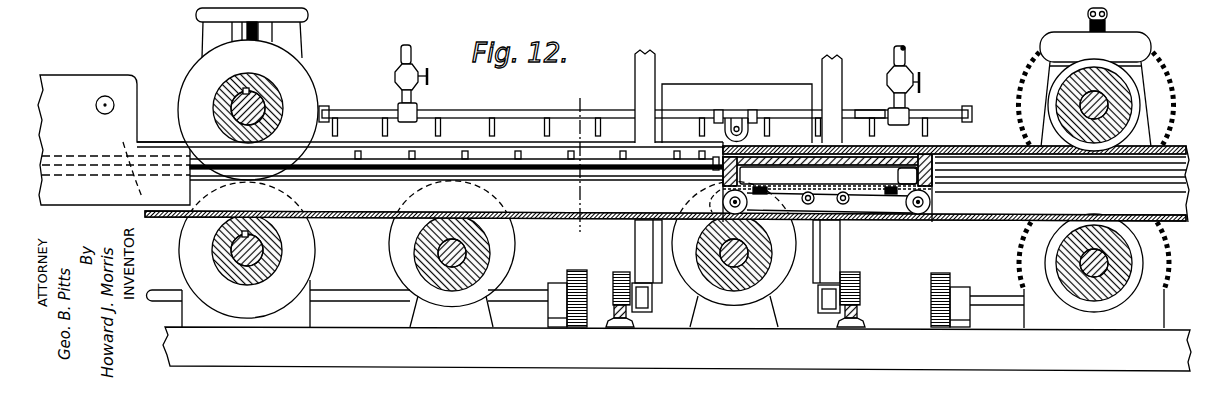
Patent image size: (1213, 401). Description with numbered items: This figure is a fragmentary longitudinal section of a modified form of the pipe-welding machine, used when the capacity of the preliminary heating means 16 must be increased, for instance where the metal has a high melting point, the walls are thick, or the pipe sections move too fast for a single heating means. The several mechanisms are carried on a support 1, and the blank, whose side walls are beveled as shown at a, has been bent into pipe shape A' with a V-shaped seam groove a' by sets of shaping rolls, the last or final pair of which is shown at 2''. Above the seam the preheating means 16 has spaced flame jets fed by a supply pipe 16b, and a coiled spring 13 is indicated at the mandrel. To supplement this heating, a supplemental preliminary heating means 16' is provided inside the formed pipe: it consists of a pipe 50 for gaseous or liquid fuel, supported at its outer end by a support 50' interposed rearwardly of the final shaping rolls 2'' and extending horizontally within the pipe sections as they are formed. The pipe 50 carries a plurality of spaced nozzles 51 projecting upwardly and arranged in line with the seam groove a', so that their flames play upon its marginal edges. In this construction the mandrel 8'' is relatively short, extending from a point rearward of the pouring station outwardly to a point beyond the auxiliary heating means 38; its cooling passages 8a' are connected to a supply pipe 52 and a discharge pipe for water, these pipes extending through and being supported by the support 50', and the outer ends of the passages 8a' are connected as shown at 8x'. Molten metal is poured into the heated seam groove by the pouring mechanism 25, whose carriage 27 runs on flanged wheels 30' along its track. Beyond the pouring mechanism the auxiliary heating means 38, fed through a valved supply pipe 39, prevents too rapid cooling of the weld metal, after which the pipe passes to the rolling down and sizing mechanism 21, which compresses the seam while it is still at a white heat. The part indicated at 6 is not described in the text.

The support 1 is at (903, 327).
The last or final pair of shaping rolls 2'' is at (239, 94).
The support 50' is at (114, 126).
The preheating means 16 is at (645, 111).
The supply pipe 16b is at (450, 111).
The auxiliary (supplemental) preliminary heating means 16' is at (430, 143).
The coiled spring 13 is at (580, 167).
The jets or nozzles 51 is at (358, 151).
The pipe 50 is at (457, 183).
The seam groove a' is at (457, 174).
The supply pipe 52 is at (564, 176).
The clamp 6 is at (738, 0).
The mechanism for supplying and pouring molten metal 25 is at (738, 96).
The beveled side walls a is at (870, 93).
The auxiliary heating means 38 is at (852, 117).
The valved supply pipe 39 is at (897, 77).
The connection of passage outer ends 8x' is at (954, 141).
The rolling down and sizing mechanism 21 is at (1077, 79).
The mandrel 8'' is at (1062, 184).
The passages (conduits) 8a' is at (796, 198).
The carriage 27 is at (841, 266).
The flanged wheels 30' is at (869, 295).
The pipe A' is at (665, 228).